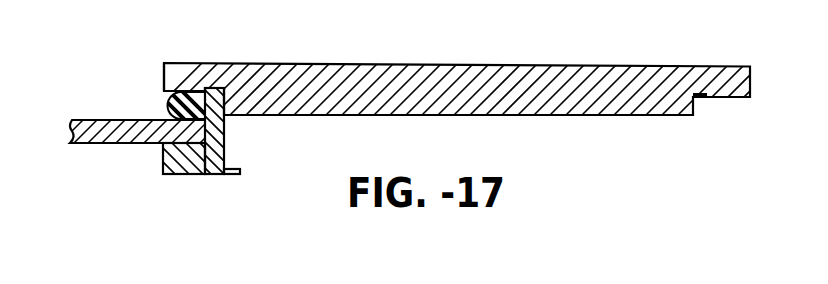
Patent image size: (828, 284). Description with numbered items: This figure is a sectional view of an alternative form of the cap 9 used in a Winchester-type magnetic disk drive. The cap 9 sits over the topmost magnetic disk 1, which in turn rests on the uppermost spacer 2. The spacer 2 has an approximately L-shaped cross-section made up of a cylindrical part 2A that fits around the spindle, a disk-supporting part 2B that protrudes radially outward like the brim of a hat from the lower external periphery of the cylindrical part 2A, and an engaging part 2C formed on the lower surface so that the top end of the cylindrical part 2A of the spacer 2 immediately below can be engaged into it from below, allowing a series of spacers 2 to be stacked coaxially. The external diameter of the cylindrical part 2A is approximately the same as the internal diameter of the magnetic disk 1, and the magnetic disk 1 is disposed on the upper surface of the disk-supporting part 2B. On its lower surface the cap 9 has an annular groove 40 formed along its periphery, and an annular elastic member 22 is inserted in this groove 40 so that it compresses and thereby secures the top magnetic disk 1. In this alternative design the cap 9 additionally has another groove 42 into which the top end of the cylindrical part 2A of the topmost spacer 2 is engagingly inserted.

The magnetic disk 1 is at (105, 143).
The spacer 2 is at (199, 154).
The cylindrical part 2A is at (243, 164).
The disk-supporting part 2B is at (176, 175).
The engaging part 2C is at (218, 175).
The cap 9 is at (501, 70).
The annular elastic member 22 is at (188, 92).
The annular groove 40 is at (164, 92).
The groove 42 is at (700, 98).